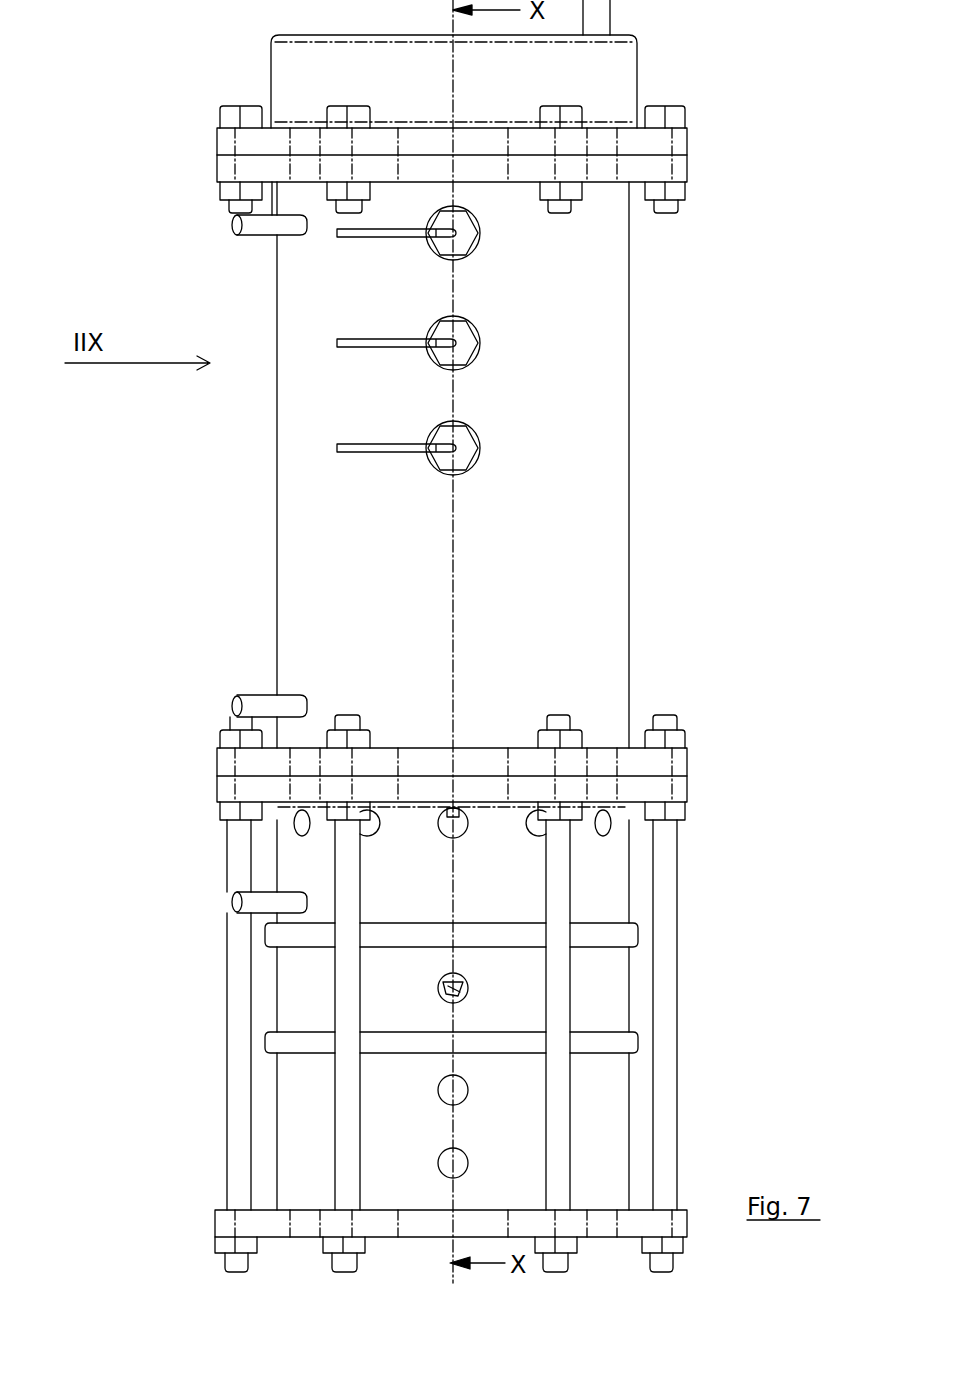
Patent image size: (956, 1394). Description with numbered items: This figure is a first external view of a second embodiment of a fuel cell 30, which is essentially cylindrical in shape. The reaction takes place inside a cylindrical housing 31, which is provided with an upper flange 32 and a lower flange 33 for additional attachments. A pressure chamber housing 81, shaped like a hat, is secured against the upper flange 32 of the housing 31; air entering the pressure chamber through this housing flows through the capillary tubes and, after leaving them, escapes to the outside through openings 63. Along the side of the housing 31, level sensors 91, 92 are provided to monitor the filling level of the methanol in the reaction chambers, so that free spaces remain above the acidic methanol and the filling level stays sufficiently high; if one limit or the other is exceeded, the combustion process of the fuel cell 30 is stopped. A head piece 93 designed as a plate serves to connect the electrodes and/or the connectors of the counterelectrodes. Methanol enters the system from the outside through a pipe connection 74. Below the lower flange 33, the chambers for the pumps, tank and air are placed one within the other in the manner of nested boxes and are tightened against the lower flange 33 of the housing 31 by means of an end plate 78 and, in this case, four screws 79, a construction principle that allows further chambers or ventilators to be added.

The fuel cell 30 is at (720, 105).
The housing 31 is at (603, 553).
The upper flange 32 is at (690, 165).
The lower flange 33 is at (235, 764).
The openings 63 is at (312, 832).
The pipe connection 74 is at (270, 905).
The end plate 78 is at (218, 1220).
The screws 79 is at (235, 1151).
The pressure chamber housing 81 is at (283, 72).
The level sensor 91 is at (478, 232).
The level sensor 92 is at (480, 343).
The head piece 93 is at (480, 447).